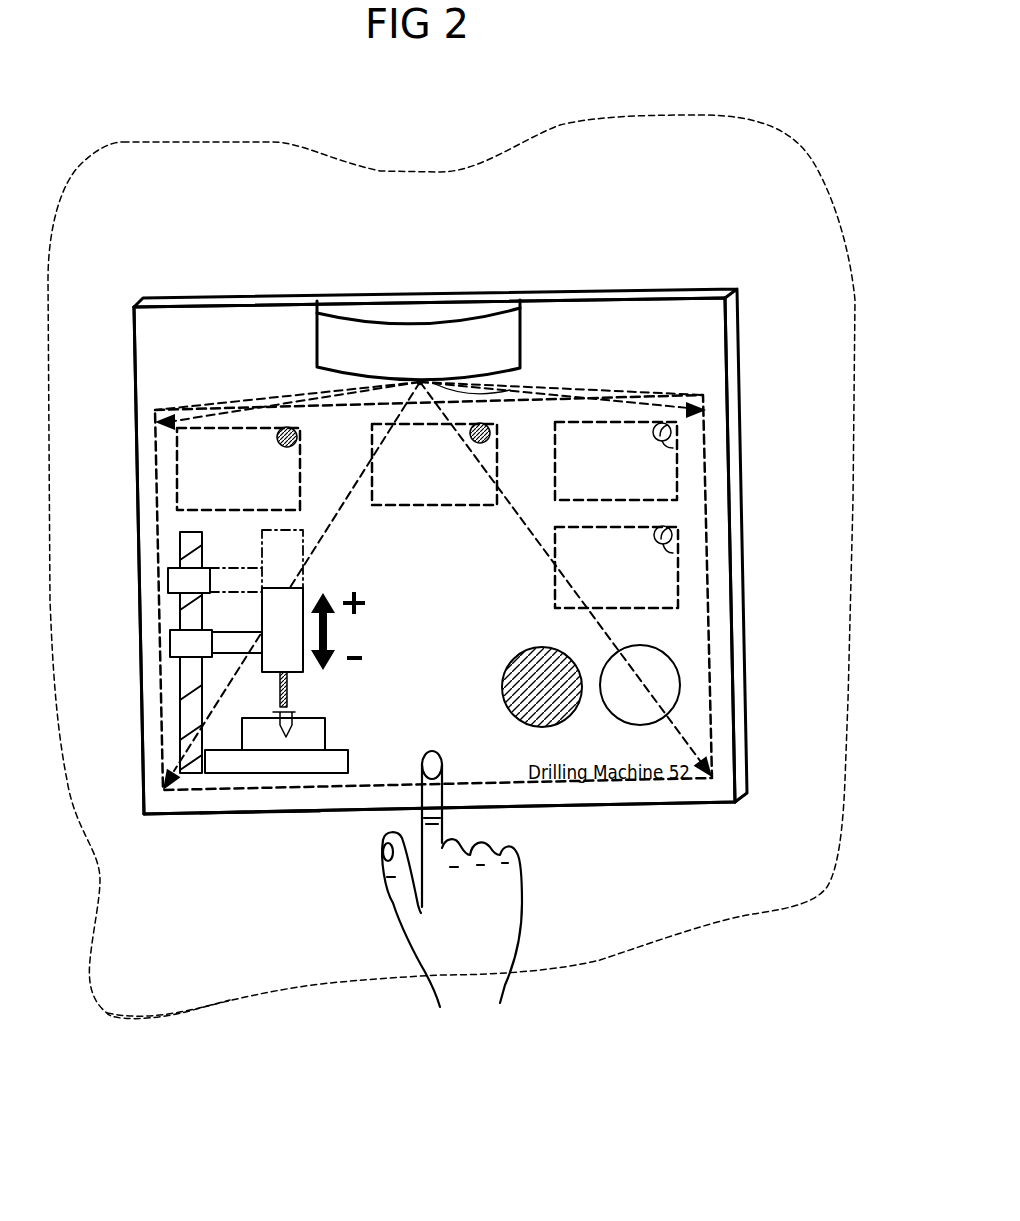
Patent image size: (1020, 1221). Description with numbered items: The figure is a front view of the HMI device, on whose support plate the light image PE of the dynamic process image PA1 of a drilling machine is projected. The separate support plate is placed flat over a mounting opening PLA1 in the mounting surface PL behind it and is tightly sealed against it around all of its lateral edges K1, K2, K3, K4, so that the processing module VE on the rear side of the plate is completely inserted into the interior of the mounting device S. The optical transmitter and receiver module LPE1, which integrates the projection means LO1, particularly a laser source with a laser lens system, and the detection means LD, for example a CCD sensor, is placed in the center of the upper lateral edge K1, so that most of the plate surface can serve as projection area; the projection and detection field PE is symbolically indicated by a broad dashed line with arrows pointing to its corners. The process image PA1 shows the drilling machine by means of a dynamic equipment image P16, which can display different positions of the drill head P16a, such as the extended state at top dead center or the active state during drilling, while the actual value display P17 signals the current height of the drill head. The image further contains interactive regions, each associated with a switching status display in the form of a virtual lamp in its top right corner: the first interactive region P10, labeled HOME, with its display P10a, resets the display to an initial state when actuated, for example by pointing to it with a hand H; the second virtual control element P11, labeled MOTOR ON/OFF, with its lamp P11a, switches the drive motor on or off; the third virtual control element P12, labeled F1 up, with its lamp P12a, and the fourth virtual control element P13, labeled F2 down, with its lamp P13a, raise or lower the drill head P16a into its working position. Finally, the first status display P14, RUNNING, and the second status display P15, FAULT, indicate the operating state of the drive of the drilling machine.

The mounting device S is at (318, 152).
The mounting surface PL is at (193, 993).
The image of operating panel I is at (697, 320).
The upper lateral edge K1 is at (663, 290).
The lateral edge K2 is at (657, 807).
The lateral edge K3 is at (728, 340).
The lateral edge K4 is at (135, 367).
The processing module VE is at (380, 295).
The optical transmitter and receiver module LPE1 is at (397, 318).
The projection means LO1 is at (425, 381).
The detection means LD is at (510, 388).
The light image PE is at (690, 393).
The dynamic process image PA1 is at (688, 426).
The first interactive region P10 is at (193, 453).
The switching status display P10a is at (283, 437).
The second virtual control element P11 is at (367, 427).
The switching status display P11a is at (470, 430).
The third virtual control element P12 is at (677, 450).
The switching status display P12a is at (677, 453).
The fourth virtual control element P13 is at (673, 553).
The switching status display P13a is at (672, 560).
The first status display P14 is at (507, 708).
The second status display P15 is at (670, 692).
The dynamic equipment image P16 is at (173, 613).
The drill head P16a is at (280, 657).
The actual value display P17 is at (345, 665).
The mounting opening PLA1 is at (260, 813).
The hand H is at (494, 987).